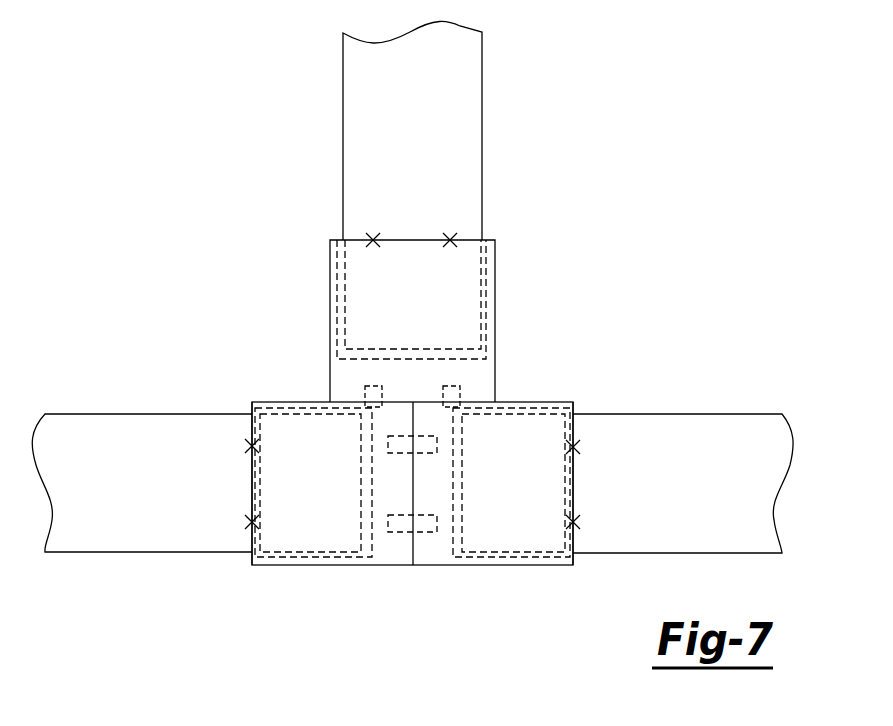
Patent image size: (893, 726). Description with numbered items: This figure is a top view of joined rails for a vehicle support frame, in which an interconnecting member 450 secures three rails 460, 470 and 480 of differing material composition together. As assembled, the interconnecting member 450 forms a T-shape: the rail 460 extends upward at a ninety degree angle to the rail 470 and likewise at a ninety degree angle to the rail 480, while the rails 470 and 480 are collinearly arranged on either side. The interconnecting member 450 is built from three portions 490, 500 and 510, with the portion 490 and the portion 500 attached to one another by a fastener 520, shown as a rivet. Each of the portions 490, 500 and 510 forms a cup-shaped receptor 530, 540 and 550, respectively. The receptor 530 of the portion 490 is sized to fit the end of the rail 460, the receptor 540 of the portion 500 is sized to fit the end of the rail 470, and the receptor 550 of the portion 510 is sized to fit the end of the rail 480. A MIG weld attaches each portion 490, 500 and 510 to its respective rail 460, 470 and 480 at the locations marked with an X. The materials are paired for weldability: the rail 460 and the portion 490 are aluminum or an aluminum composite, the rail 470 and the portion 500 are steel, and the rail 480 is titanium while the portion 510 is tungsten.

The interconnecting member 450 is at (573, 632).
The rail 460 is at (458, 86).
The rail 470 is at (88, 428).
The rail 480 is at (708, 414).
The portion 490 is at (495, 342).
The portion 500 is at (263, 400).
The portion 510 is at (563, 400).
The fastener 520 is at (364, 390).
The receptor 530 is at (486, 273).
The receptor 540 is at (290, 558).
The receptor 550 is at (537, 558).